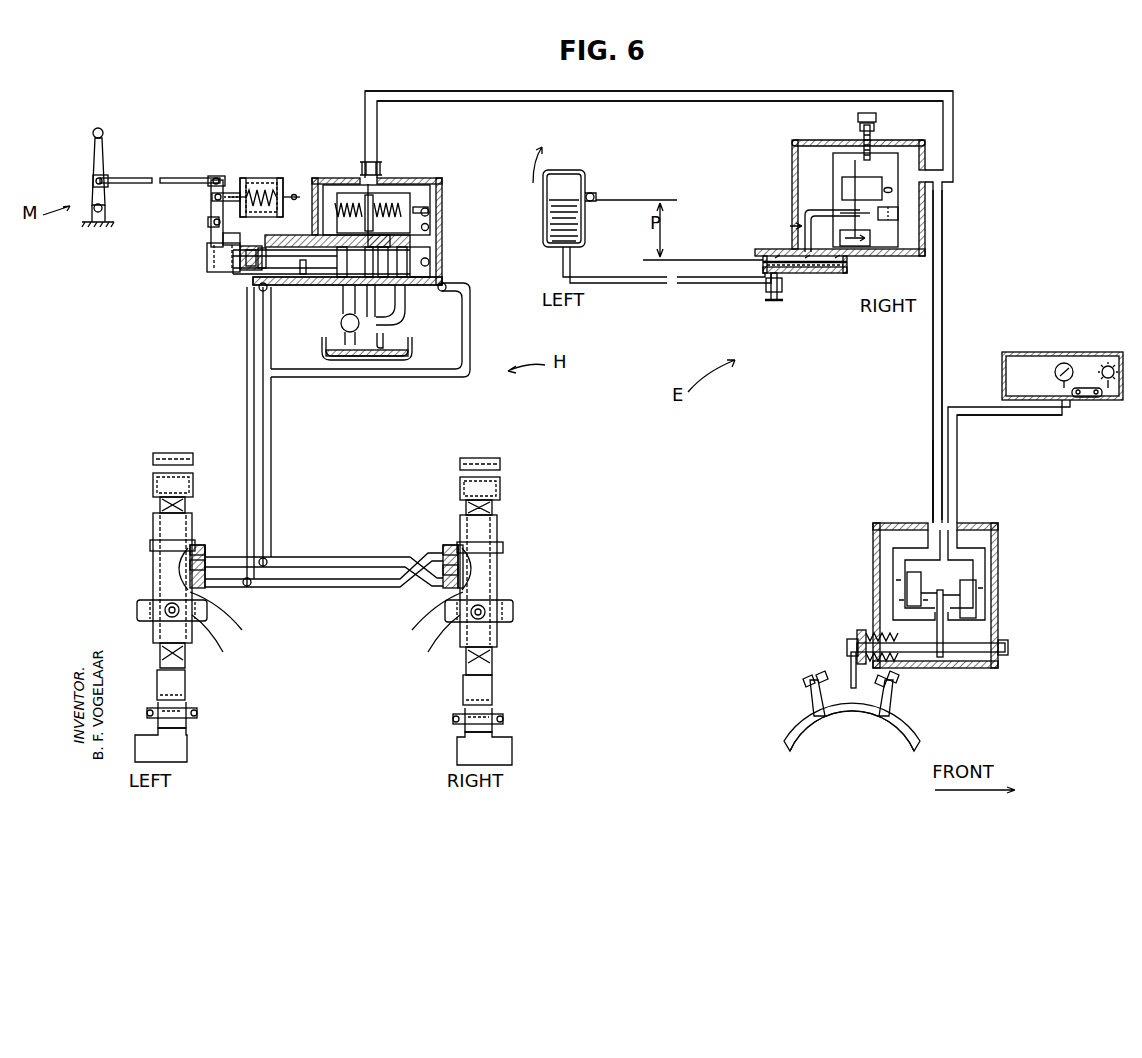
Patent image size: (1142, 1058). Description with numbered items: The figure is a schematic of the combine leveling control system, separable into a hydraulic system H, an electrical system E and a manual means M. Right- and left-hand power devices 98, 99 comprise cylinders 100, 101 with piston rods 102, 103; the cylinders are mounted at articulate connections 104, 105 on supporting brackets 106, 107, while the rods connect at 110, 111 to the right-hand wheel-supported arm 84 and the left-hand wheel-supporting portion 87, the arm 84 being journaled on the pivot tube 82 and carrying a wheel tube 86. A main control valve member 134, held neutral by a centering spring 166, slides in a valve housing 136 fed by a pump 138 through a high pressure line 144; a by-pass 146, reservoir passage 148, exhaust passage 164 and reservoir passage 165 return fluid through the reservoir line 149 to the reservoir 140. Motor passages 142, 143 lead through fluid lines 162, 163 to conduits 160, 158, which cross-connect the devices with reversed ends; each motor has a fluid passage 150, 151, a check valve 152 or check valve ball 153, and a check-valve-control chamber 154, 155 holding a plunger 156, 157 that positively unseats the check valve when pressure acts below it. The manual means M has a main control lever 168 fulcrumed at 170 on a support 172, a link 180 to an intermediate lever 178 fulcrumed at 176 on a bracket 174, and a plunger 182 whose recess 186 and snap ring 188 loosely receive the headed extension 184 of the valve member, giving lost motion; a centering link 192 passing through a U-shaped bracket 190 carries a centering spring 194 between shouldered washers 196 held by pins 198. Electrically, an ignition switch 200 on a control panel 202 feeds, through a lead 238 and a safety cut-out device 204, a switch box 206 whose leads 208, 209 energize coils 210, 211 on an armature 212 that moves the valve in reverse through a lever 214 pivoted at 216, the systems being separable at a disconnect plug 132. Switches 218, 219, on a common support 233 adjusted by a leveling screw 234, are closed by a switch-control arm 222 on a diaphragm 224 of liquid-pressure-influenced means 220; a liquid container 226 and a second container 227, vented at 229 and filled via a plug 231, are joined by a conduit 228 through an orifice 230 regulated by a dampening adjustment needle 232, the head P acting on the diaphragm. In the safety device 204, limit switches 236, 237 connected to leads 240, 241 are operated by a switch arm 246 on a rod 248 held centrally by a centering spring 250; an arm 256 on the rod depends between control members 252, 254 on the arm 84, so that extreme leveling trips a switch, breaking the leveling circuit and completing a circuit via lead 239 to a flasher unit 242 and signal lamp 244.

The pivot tube 82 is at (836, 722).
The wheel-supported arm 84 is at (912, 738).
The wheel tube 86 is at (512, 750).
The wheel-supporting portion 87 is at (187, 750).
The right-hand power-operated device 98 is at (487, 453).
The left-hand power-operated device 99 is at (179, 449).
The cylinder 100 is at (500, 490).
The cylinder 101 is at (153, 482).
The piston rod 102 is at (492, 685).
The piston rod 103 is at (185, 688).
The articulate connection 104 is at (490, 606).
The cylinder mounting 105 is at (165, 606).
The supporting bracket 106 is at (420, 640).
The supporting bracket 107 is at (233, 640).
The articulate connection 110 is at (503, 719).
The articulate connection 111 is at (197, 714).
The disconnect plug 132 is at (380, 164).
The main control valve member 134 is at (442, 252).
The valve housing 136 is at (425, 207).
The pump 138 is at (330, 340).
The reservoir 140 is at (412, 349).
The right-hand motor passage 142 is at (320, 285).
The left-hand motor passage 143 is at (448, 284).
The high pressure line 144 is at (341, 323).
The high pressure by-pass 146 is at (378, 305).
The reservoir passage 148 is at (395, 241).
The reservoir line 149 is at (394, 340).
The fluid passage 150 is at (460, 548).
The fluid passage 151 is at (196, 545).
The check valve 152 is at (445, 556).
The check valve ball 153 is at (204, 560).
The check-valve-control chamber 154 is at (460, 588).
The check-valve-control chamber 155 is at (195, 588).
The check-valve-control plunger 156 is at (446, 584).
The check-valve-control plunger 157 is at (205, 582).
The conduit 158 is at (322, 557).
The conduit 160 is at (338, 587).
The fluid line 162 is at (247, 408).
The left-hand fluid line 163 is at (271, 426).
The exhaust passage 164 is at (332, 245).
The reservoir passage 165 is at (402, 312).
The centering spring 166 is at (303, 285).
The main control lever 168 is at (95, 150).
The fulcrum 170 is at (103, 208).
The support 172 is at (98, 224).
The support bracket 174 is at (211, 226).
The fulcrum 176 is at (209, 220).
The intermediate lever 178 is at (211, 244).
The link 180 is at (178, 178).
The plunger 182 is at (207, 264).
The end extension 184 is at (252, 270).
The recess 186 is at (250, 262).
The snap ring 188 is at (266, 275).
The U-shaped bracket 190 is at (258, 178).
The centering link 192 is at (217, 192).
The centering spring 194 is at (262, 190).
The shouldered washers 196 is at (243, 178).
The pins 198 is at (232, 192).
The ignition switch 200 is at (1057, 366).
The control panel 202 is at (1078, 352).
The safety cut-out device 204 is at (998, 526).
The main control switch box 206 is at (792, 142).
The right-hand electrical lead 208 is at (690, 101).
The left-hand electrical lead 209 is at (688, 91).
The right-hand coil 210 is at (392, 200).
The left-hand coil 211 is at (350, 200).
The armature 212 is at (405, 195).
The beam or lever 214 is at (430, 211).
The pivot 216 is at (430, 226).
The upper single throw switch 218 is at (842, 188).
The lower single throw switch 219 is at (880, 214).
The liquid-pressure-influenced means 220 is at (773, 222).
The switch-control arm 222 is at (812, 212).
The diaphragm 224 is at (826, 273).
The liquid container 226 is at (784, 285).
The second container 227 is at (585, 175).
The liquid conduit 228 is at (666, 286).
The vent 229 is at (560, 170).
The orifice 230 is at (763, 268).
The filler and level-testing plug 231 is at (596, 197).
The dampening adjustment needle 232 is at (773, 301).
The common support 233 is at (833, 165).
The leveling screw 234 is at (858, 120).
The right-hand limit switch 236 is at (976, 600).
The left-hand limit switch 237 is at (907, 590).
The lead 238 is at (979, 407).
The lead 239 is at (1010, 416).
The right-hand lead 240 is at (943, 330).
The left-hand lead 241 is at (933, 475).
The flasher unit 242 is at (1086, 400).
The signal lamp 244 is at (1109, 364).
The switch arm 246 is at (941, 657).
The rod 248 is at (1008, 648).
The centering spring 250 is at (862, 632).
The control member 252 is at (805, 678).
The control member 254 is at (893, 690).
The arm 256 is at (851, 660).